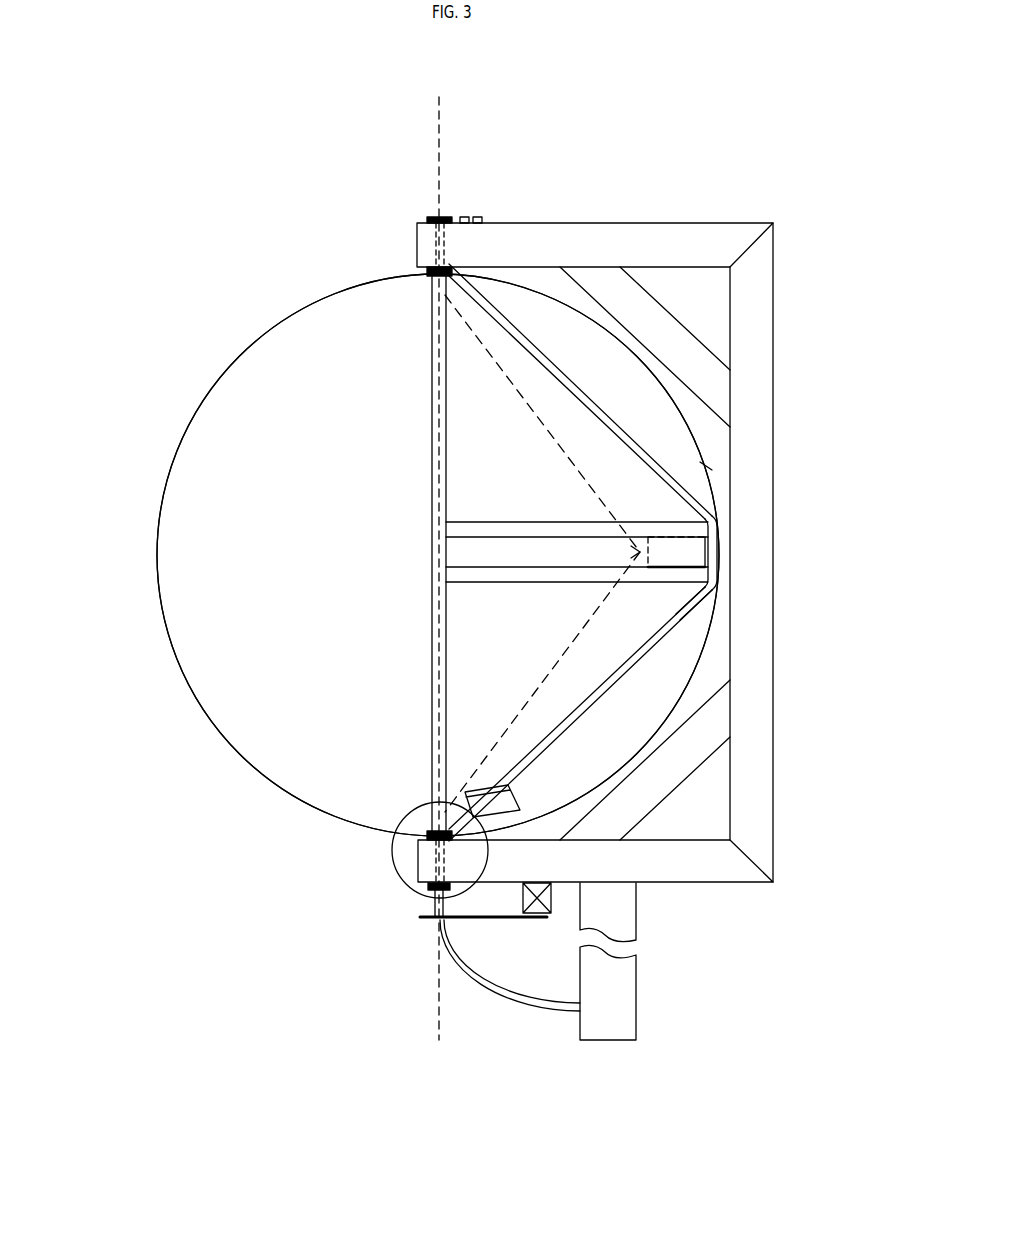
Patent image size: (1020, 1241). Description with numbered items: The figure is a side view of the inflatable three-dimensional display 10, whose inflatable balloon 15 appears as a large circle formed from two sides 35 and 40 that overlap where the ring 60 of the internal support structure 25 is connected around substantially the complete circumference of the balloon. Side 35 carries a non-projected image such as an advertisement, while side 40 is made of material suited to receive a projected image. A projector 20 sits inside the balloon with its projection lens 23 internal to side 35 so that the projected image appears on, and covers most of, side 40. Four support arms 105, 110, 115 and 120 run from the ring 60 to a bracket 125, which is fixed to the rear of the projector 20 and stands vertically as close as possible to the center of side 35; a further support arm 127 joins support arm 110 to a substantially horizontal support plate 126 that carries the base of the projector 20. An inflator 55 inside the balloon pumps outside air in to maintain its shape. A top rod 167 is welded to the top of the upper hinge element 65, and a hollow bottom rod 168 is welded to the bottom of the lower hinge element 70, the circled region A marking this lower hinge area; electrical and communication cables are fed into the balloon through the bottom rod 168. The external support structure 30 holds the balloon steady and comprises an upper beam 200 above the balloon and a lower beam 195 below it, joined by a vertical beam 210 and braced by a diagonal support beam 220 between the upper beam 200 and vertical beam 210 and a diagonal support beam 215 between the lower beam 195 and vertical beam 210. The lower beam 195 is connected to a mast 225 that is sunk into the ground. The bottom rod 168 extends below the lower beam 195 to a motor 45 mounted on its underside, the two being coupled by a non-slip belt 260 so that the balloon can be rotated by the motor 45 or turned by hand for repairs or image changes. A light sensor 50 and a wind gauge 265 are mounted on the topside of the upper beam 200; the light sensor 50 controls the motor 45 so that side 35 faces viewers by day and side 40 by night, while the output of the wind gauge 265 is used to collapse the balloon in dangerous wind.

The inflatable three-dimensional display 10 is at (473, 576).
The inflatable balloon 15 is at (400, 549).
The projector 20 is at (772, 535).
The projection lens 23 is at (752, 419).
The internal support structure 25 is at (375, 553).
The external support structure 30 is at (660, 513).
The side 35 is at (676, 552).
The side 40 is at (382, 555).
The motor 45 is at (731, 973).
The light sensor 50 is at (483, 156).
The inflator 55 is at (680, 750).
The ring 60 is at (299, 523).
The upper hinge element 65 is at (327, 214).
The lower hinge element 70 is at (287, 860).
The support arm 105 is at (676, 391).
The support arm 110 is at (676, 714).
The support arm 115 is at (674, 584).
The support arm 120 is at (674, 488).
The bracket 125 is at (804, 532).
The support plate 126 is at (775, 554).
The support arm 127 is at (789, 614).
The top rod 167 is at (378, 177).
The bottom rod 168 is at (337, 915).
The lower beam 195 is at (653, 887).
The upper beam 200 is at (595, 179).
The vertical beam 210 is at (816, 552).
The diagonal support beam 215 is at (725, 769).
The diagonal support beam 220 is at (731, 347).
The mast 225 is at (706, 939).
The non-slip belt 260 is at (510, 992).
The wind gauge 265 is at (541, 156).
The detail area A is at (644, 812).